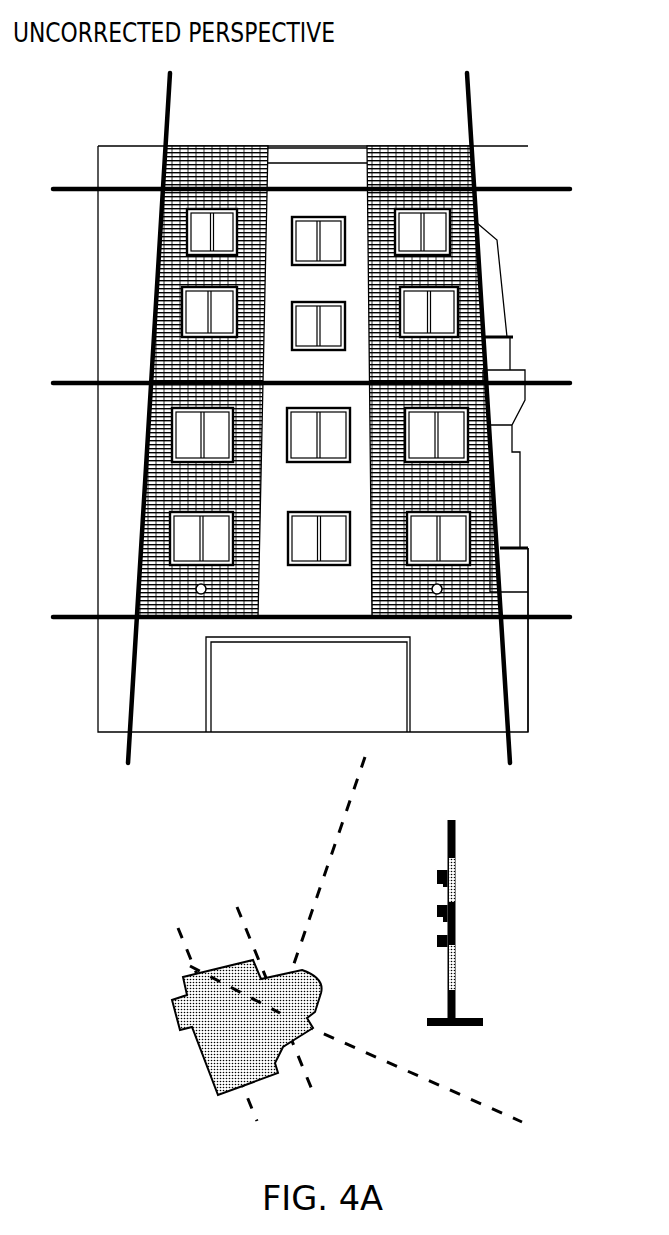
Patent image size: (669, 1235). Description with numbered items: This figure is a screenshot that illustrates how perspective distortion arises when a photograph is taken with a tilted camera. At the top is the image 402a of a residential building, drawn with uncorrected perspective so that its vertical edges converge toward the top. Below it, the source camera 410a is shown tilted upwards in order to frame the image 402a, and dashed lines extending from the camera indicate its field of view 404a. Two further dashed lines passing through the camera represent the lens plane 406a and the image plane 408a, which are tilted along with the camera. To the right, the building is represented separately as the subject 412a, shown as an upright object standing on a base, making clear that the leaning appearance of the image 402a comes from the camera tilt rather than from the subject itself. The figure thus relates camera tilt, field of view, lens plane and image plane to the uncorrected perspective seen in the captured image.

The image 402a is at (512, 337).
The field of view 404a is at (323, 888).
The lens plane 406a is at (186, 953).
The image plane 408a is at (250, 930).
The source camera 410a is at (288, 1042).
The subject 412a is at (456, 935).